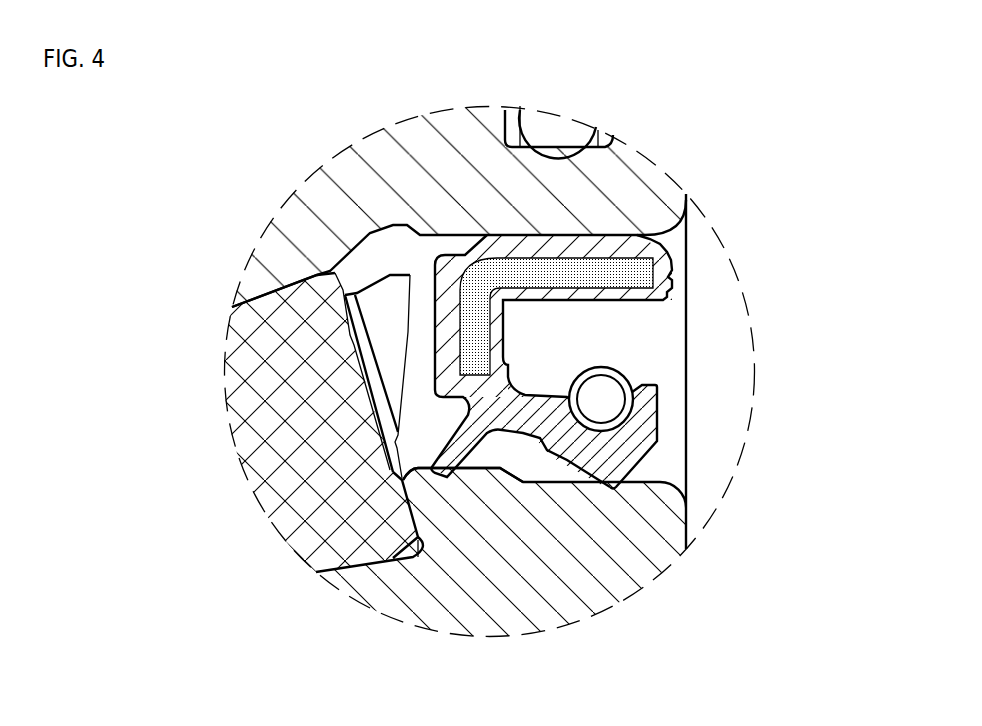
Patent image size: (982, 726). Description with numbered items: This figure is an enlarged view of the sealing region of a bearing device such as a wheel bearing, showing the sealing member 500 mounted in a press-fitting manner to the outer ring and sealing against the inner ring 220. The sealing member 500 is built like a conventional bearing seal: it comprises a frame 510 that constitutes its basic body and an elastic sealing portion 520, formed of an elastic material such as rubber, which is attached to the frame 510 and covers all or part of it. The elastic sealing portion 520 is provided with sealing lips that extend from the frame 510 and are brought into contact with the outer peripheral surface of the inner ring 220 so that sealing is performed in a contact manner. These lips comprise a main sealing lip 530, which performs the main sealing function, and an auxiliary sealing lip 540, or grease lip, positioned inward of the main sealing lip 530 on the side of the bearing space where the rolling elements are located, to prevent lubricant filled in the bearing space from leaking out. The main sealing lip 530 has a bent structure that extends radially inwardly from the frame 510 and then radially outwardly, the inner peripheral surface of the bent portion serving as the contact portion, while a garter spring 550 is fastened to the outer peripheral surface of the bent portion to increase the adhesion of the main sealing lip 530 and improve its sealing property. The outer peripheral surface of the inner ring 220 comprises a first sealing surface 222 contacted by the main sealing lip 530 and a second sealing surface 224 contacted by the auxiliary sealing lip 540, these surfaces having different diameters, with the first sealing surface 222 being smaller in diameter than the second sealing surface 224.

The inner ring 220 is at (553, 596).
The first sealing surface 222 is at (642, 482).
The second sealing surface 224 is at (485, 467).
The sealing member 500 is at (587, 454).
The frame 510 is at (633, 275).
The elastic sealing portion 520 is at (507, 394).
The main sealing lip 530 is at (637, 452).
The auxiliary sealing lip 540 is at (467, 450).
The garter spring 550 is at (620, 368).